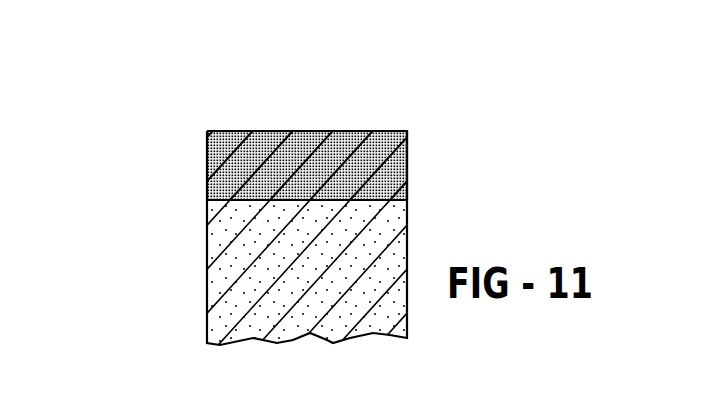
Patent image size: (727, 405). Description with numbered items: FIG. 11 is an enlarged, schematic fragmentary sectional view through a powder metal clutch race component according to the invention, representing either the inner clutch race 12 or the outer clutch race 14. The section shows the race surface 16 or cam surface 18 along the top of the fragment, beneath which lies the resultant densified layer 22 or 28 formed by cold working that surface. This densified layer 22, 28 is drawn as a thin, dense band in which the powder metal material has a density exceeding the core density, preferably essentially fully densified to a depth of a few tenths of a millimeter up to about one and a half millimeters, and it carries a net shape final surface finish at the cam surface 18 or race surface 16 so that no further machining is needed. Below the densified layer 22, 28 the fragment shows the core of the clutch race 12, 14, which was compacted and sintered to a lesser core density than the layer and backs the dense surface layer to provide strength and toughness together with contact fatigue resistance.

The inner clutch race 12 is at (300, 253).
The outer clutch race component 14 is at (207, 293).
The race surface 16 is at (260, 216).
The cam surface 18 is at (243, 131).
The densified layer 22 is at (330, 113).
The densified layer 28 is at (385, 131).